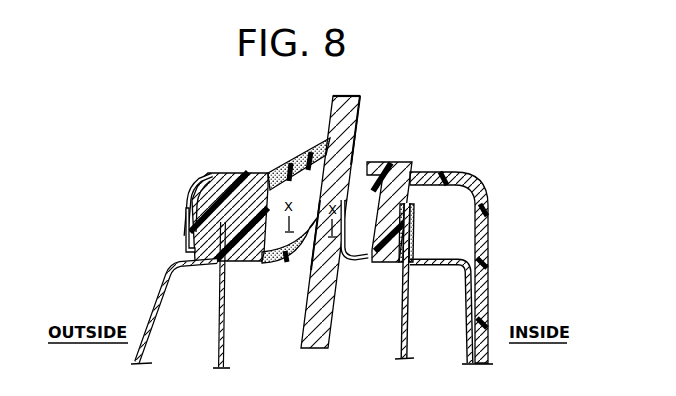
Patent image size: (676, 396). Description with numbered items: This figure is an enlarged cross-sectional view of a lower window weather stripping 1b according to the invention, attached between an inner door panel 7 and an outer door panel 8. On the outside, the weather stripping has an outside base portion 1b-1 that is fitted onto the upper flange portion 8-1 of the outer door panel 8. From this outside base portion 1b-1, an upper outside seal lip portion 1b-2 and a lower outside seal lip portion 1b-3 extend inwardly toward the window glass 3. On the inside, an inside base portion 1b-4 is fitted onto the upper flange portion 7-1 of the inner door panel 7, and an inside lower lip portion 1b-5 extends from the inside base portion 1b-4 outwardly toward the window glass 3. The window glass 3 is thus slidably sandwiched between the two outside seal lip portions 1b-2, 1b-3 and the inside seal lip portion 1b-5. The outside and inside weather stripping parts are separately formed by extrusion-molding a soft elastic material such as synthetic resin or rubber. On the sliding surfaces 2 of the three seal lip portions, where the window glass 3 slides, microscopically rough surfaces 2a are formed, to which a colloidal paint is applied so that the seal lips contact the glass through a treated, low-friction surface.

The lower window weather stripping 1b is at (256, 165).
The outside base portion 1b-1 is at (185, 207).
The upper outside seal lip portion 1b-2 is at (295, 157).
The lower outside seal lip portion 1b-3 is at (273, 266).
The inside base portion 1b-4 is at (437, 175).
The inside lower lip portion 1b-5 is at (402, 307).
The sliding surfaces 2 is at (355, 131).
The microscopically rough surfaces 2a is at (355, 156).
The window glass 3 is at (366, 100).
The inner door panel 7 is at (450, 258).
The upper flange portion of the inner door panel 7-1 is at (413, 220).
The outer door panel 8 is at (153, 306).
The upper flange portion of the outer door panel 8-1 is at (183, 237).